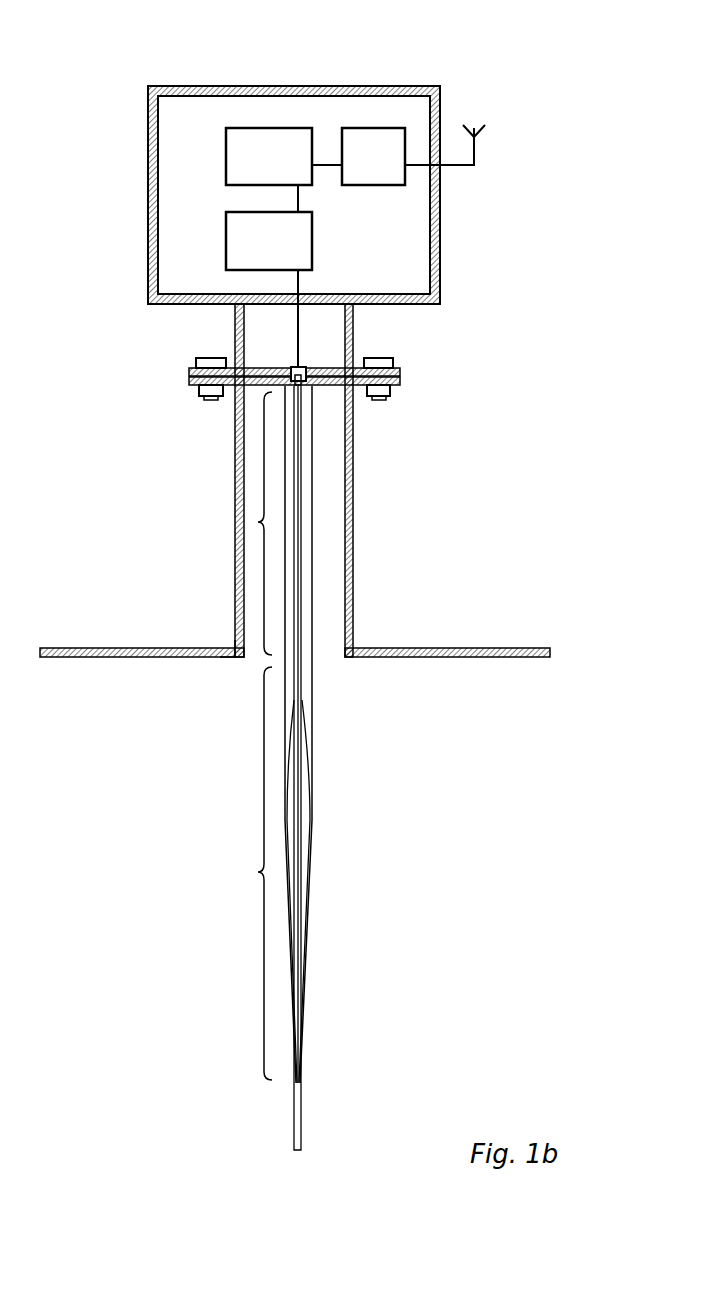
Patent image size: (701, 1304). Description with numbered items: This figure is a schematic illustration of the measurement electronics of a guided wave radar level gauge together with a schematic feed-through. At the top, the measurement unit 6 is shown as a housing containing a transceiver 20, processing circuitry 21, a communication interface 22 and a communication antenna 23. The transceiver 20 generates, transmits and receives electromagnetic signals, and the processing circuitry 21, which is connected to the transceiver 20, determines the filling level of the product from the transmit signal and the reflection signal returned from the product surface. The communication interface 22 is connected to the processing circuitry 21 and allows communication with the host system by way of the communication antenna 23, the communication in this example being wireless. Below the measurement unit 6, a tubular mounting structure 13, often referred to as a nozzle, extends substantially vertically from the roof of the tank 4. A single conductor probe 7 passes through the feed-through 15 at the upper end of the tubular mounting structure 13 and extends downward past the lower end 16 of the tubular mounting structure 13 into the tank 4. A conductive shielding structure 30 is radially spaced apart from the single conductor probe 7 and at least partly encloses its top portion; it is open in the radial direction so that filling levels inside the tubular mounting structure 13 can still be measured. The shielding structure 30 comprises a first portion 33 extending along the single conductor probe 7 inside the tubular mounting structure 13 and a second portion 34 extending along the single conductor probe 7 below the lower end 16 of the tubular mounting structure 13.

The tank 4 is at (474, 647).
The measurement unit 6 is at (208, 86).
The single conductor probe 7 is at (300, 918).
The tubular mounting structure 13 is at (353, 595).
The feed-through 15 is at (305, 367).
The lower end of the tubular mounting structure 16 is at (244, 660).
The transceiver 20 is at (312, 242).
The processing circuitry 21 is at (226, 165).
The communication interface 22 is at (375, 128).
The communication antenna 23 is at (474, 152).
The conductive shielding structure 30 is at (286, 822).
The first portion of the shielding structure 33 is at (258, 522).
The second portion of the shielding structure 34 is at (258, 872).